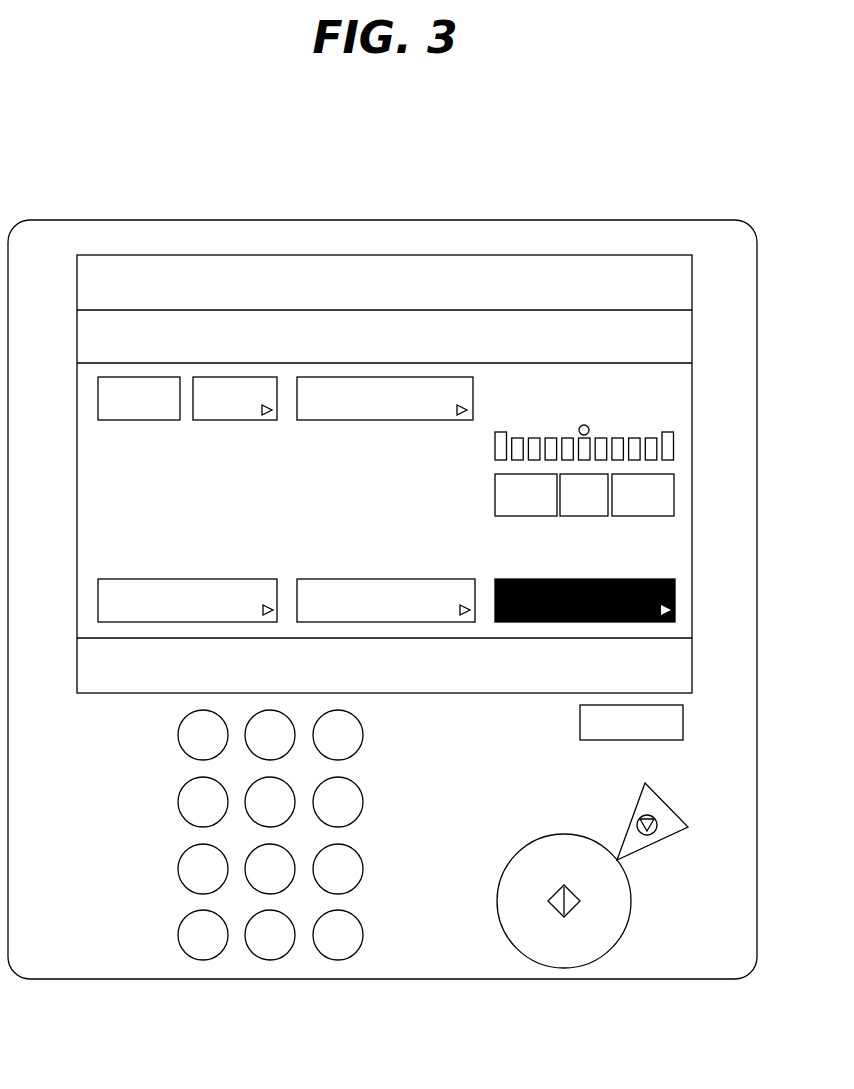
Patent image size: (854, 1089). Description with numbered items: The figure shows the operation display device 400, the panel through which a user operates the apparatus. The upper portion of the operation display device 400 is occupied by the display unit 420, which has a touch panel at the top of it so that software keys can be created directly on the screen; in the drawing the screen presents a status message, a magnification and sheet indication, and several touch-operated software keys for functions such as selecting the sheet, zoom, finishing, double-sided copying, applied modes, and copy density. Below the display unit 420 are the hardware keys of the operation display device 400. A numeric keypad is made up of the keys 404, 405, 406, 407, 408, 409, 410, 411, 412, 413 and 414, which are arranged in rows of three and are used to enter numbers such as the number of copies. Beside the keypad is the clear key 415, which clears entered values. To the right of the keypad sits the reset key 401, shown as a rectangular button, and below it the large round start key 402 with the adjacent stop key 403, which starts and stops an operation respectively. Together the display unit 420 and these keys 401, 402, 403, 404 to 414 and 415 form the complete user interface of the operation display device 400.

The operation display device 400 is at (236, 220).
The reset key 401 is at (580, 722).
The start key 402 is at (548, 835).
The stop key 403 is at (662, 840).
The numeric keypad key 404 is at (178, 735).
The numeric keypad key 405 is at (288, 753).
The numeric keypad key 406 is at (363, 735).
The numeric keypad key 407 is at (178, 802).
The numeric keypad key 408 is at (288, 820).
The numeric keypad key 409 is at (363, 802).
The numeric keypad key 410 is at (178, 869).
The numeric keypad key 411 is at (288, 887).
The numeric keypad key 412 is at (363, 868).
The numeric keypad key 413 is at (178, 935).
The numeric keypad key 414 is at (263, 960).
The clear key 415 is at (363, 935).
The display unit 420 is at (537, 256).